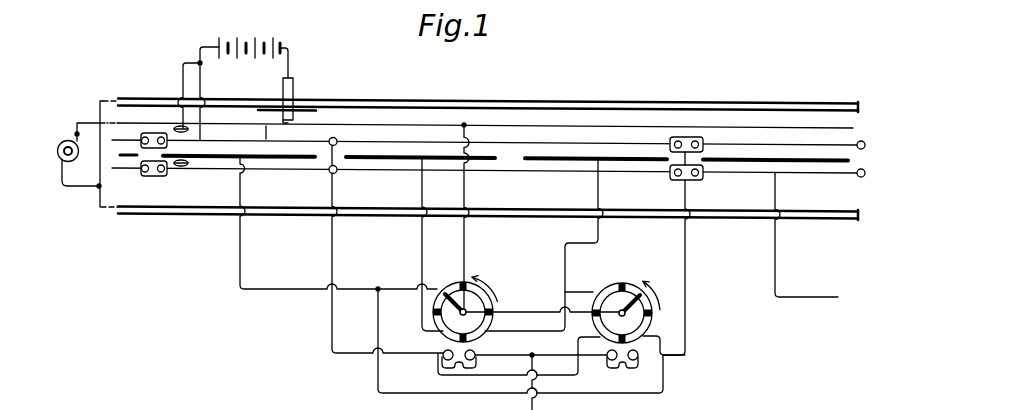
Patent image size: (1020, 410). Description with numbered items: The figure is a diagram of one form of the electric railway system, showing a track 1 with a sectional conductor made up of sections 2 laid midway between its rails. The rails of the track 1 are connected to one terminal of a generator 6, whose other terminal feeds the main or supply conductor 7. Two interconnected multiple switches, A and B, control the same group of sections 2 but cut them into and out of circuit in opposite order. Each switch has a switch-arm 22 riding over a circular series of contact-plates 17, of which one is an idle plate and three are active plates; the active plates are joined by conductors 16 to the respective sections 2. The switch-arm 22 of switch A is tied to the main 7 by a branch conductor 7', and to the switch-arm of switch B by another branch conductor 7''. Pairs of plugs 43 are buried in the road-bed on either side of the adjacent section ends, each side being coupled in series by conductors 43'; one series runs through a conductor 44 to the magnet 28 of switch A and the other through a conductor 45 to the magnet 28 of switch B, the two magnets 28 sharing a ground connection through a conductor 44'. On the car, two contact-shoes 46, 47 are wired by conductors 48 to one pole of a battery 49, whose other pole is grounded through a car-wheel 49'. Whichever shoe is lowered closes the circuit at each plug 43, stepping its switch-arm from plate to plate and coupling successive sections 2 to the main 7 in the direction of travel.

The track 1 is at (408, 99).
The sectional conductor rails 2 is at (285, 161).
The generator 6 is at (77, 152).
The main or supply conductor 7 is at (485, 133).
The branch conductor 7' is at (472, 217).
The branch conductor 7'' is at (542, 301).
The conductors 16 is at (262, 286).
The segmental contact plates or blocks 17 is at (490, 306).
The switch-arm 22 is at (440, 300).
The magnet 28 is at (476, 355).
The plugs 43 is at (488, 165).
The conductors 43' is at (334, 157).
The conductor 44 is at (375, 249).
The conductor 44' is at (541, 372).
The conductor 45 is at (687, 253).
The contact-shoe 46 is at (183, 168).
The contact-shoe 47 is at (179, 127).
The conductors 48 is at (192, 93).
The battery 49 is at (253, 47).
The car-wheel 49' is at (307, 98).